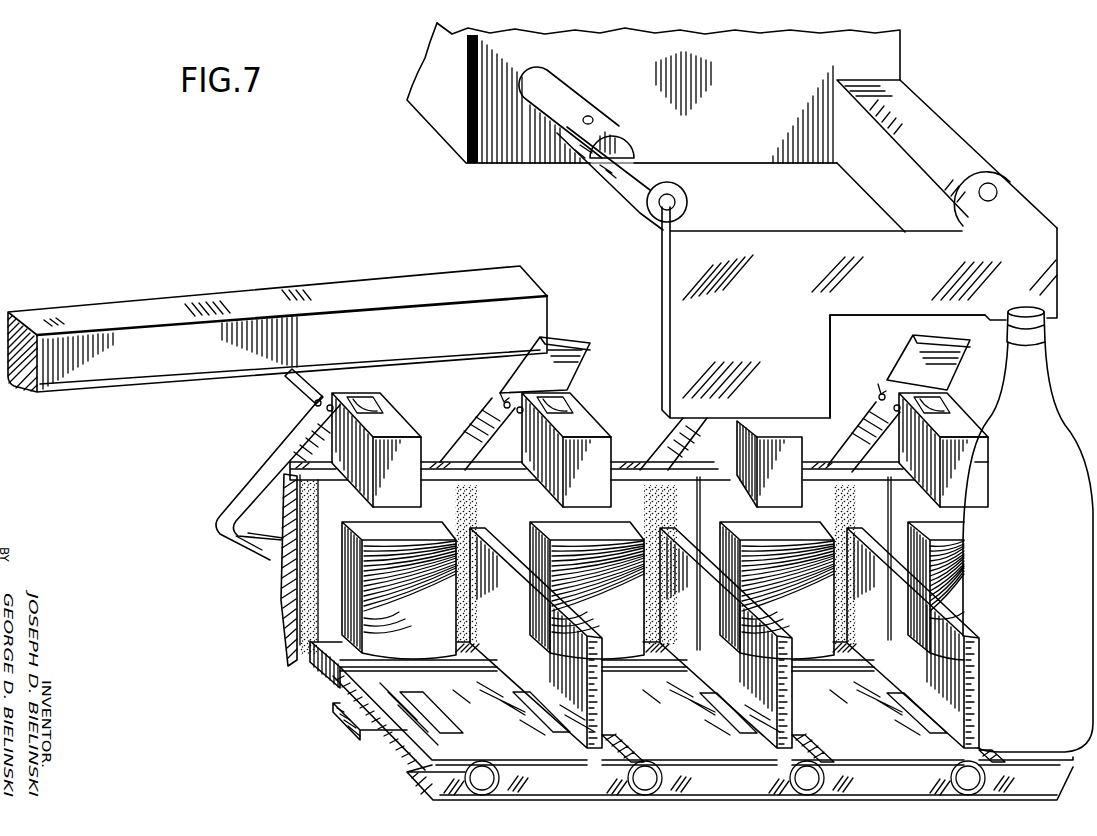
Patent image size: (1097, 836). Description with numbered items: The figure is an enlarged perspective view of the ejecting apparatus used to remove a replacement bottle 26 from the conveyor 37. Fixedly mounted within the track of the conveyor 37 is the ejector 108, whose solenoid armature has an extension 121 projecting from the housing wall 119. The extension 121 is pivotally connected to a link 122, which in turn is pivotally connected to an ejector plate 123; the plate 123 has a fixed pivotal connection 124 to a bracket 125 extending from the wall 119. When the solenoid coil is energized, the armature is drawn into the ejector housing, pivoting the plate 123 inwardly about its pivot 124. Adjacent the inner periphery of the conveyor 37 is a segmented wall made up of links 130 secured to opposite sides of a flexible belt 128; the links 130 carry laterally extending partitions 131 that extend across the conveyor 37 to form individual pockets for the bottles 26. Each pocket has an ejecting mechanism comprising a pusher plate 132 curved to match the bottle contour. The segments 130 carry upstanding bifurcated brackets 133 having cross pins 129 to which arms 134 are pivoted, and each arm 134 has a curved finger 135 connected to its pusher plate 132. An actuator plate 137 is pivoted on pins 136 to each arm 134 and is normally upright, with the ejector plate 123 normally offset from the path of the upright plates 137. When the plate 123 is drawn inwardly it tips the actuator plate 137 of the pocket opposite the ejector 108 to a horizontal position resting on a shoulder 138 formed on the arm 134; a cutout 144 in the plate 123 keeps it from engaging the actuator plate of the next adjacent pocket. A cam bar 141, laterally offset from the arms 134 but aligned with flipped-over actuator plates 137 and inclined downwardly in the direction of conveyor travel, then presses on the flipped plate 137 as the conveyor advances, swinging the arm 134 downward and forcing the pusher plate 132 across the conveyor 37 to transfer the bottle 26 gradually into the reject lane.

The ejector 108 is at (427, 121).
The housing wall 119 is at (723, 157).
The extension 121 is at (572, 99).
The link 122 is at (613, 192).
The plate 123 is at (662, 292).
The pivotal connection 124 is at (989, 190).
The bracket 125 is at (947, 133).
The cut out 144 is at (846, 333).
The cam bar 141 is at (304, 294).
The actuator plate 137 is at (297, 384).
The pins 136 is at (315, 404).
The cross pins 129 is at (327, 410).
The shoulder 138 is at (502, 392).
The arm 134 is at (262, 475).
The curved finger 135 is at (262, 557).
The links 130 is at (438, 496).
The flexible belt 128 is at (272, 640).
The bifurcated bracket 133 is at (385, 420).
The pusher plate 132 is at (937, 512).
The partition 131 is at (730, 645).
The conveyor 37 is at (408, 747).
The bottle 26 is at (1043, 437).